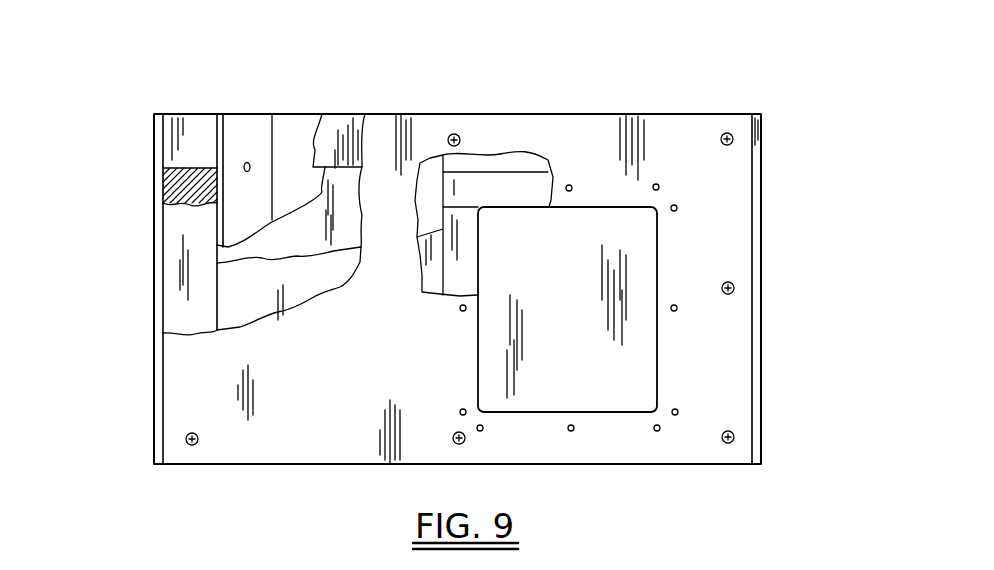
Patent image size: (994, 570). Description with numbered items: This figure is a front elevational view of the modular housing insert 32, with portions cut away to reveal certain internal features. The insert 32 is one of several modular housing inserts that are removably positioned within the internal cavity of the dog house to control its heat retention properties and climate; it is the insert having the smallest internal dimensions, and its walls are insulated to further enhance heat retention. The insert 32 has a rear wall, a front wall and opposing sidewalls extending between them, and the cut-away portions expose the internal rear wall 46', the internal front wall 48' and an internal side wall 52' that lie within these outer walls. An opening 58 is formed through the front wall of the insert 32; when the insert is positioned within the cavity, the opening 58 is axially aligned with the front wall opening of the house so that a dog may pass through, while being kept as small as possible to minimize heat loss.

The modular housing insert 32 is at (791, 100).
The internal rear wall 46' is at (395, 149).
The internal front wall 48' is at (214, 298).
The internal side wall 52' is at (146, 216).
The opening 58 is at (636, 373).